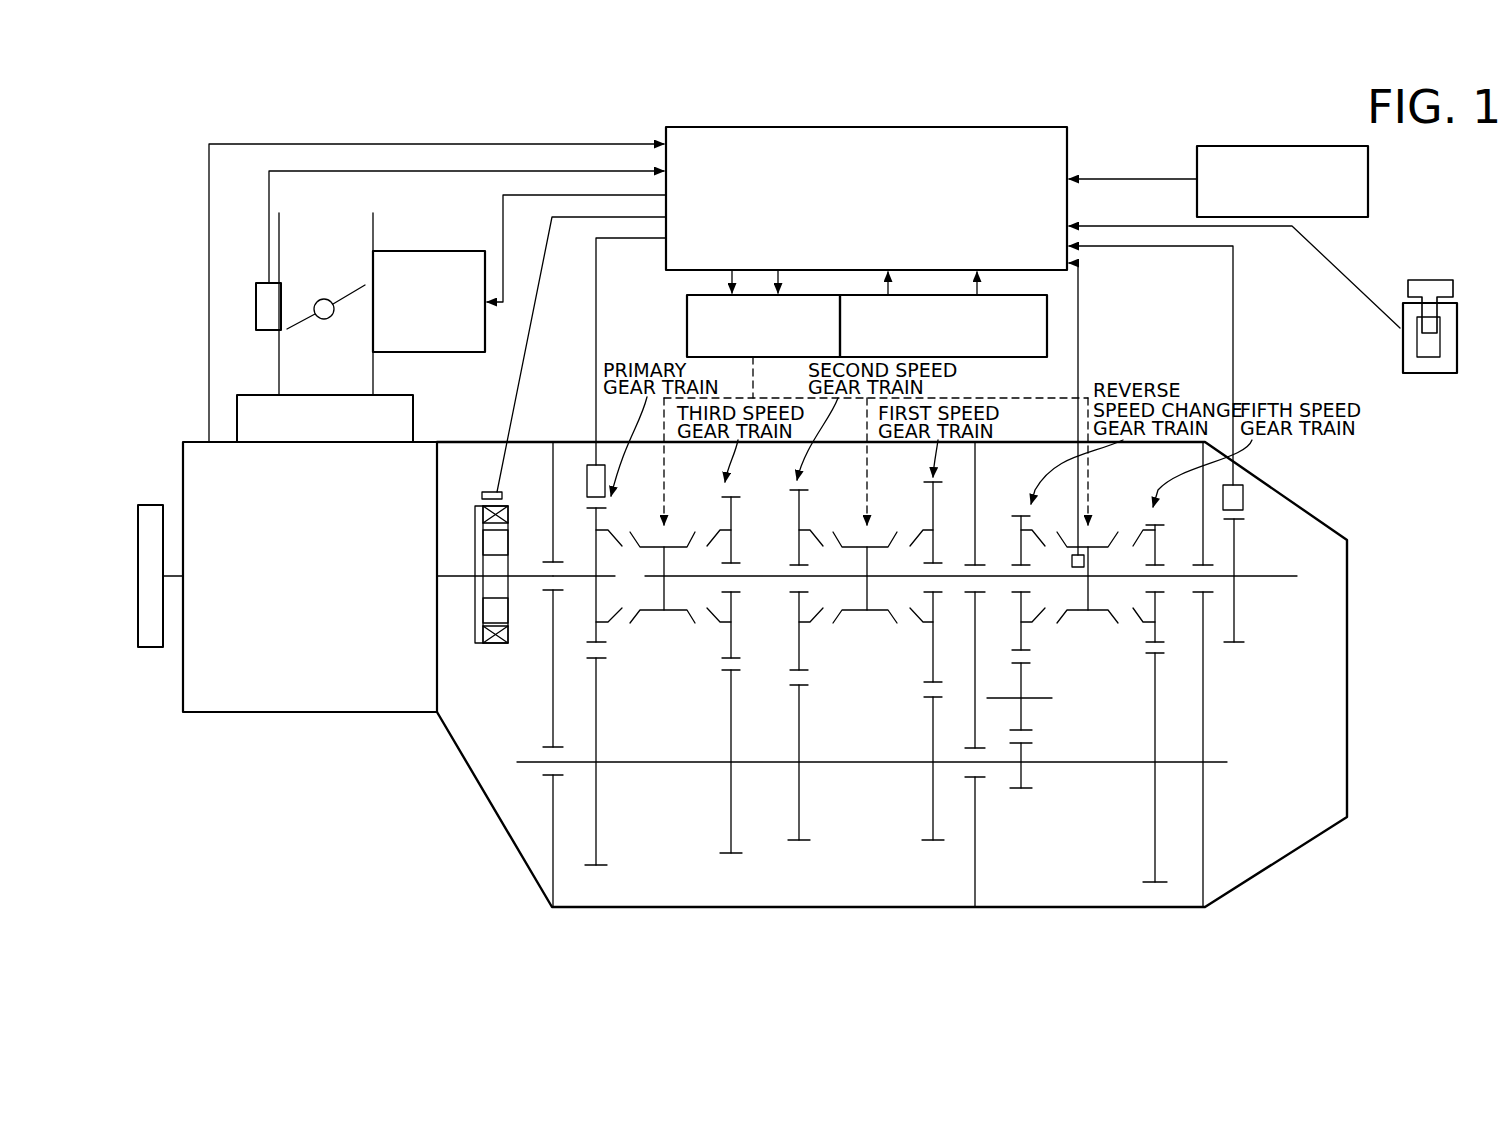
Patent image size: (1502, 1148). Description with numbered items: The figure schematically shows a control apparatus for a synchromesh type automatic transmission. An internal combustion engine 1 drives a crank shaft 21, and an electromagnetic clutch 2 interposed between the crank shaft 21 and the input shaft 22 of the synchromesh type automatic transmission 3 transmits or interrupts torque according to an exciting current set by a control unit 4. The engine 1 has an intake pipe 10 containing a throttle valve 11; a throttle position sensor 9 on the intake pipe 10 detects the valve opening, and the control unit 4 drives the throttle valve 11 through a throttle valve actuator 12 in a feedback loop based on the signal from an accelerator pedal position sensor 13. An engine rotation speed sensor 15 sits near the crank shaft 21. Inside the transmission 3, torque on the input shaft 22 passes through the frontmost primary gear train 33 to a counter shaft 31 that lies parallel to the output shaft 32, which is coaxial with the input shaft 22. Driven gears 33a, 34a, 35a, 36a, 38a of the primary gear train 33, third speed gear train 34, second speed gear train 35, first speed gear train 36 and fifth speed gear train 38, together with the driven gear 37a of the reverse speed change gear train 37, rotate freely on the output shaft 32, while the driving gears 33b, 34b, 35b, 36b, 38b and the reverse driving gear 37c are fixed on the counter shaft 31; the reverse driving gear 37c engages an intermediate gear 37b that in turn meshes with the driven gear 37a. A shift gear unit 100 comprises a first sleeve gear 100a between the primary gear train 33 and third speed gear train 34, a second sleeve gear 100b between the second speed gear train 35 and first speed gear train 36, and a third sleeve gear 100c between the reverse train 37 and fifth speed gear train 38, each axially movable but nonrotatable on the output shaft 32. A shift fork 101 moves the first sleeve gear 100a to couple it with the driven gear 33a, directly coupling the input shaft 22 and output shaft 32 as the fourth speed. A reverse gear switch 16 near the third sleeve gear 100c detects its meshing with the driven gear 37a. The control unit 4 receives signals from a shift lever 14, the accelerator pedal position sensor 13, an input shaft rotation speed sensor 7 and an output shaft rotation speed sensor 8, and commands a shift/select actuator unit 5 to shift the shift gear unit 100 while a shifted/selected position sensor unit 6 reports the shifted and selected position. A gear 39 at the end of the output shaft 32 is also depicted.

The internal combustion engine 1 is at (297, 713).
The electromagnetic clutch 2 is at (490, 655).
The synchromesh type automatic transmission 3 is at (1000, 912).
The control unit 4 is at (864, 127).
The shift/select actuator unit 5 is at (683, 330).
The shifted/selected position sensor unit 6 is at (1051, 331).
The input shaft rotation speed sensor 7 is at (588, 463).
The output shaft rotation speed sensor 8 is at (1243, 488).
The throttle position sensor 9 is at (268, 283).
The intake pipe 10 is at (374, 222).
The throttle valve 11 is at (298, 327).
The throttle valve actuator 12 is at (452, 251).
The accelerator pedal position sensor 13 is at (1232, 146).
The shift lever 14 is at (1403, 350).
The engine rotation speed sensor 15 is at (490, 491).
The reverse gear switch 16 is at (1072, 562).
The crank shaft 21 is at (456, 573).
The input shaft 22 is at (526, 573).
The counter shaft 31 is at (652, 765).
The output shaft 32 is at (1268, 576).
The primary gear train 33 is at (585, 565).
The driven gear of primary gear train 33a is at (603, 519).
The driving gear of primary gear train 33b is at (598, 710).
The third speed gear train 34 is at (738, 493).
The driven gear of third speed gear train 34a is at (735, 522).
The driving gear of third speed gear train 34b is at (733, 730).
The second speed gear train 35 is at (806, 491).
The driven gear of second speed gear train 35a is at (803, 525).
The driving gear of second speed gear train 35b is at (801, 734).
The first speed gear train 36 is at (921, 480).
The driven gear of first speed gear train 36a is at (930, 525).
The driving gear of first speed gear train 36b is at (928, 722).
The reverse speed change gear train 37 is at (1031, 525).
The driven gear of reverse speed change gear train 37a is at (1017, 523).
The intermediate gear 37b is at (1023, 710).
The driving gear of reverse speed change gear train 37c is at (1023, 776).
The fifth speed gear train 38 is at (1162, 560).
The driven gear of fifth speed gear train 38a is at (1160, 530).
The driving gear of fifth speed gear train 38b is at (1158, 703).
The output gear 39 is at (1236, 612).
The shift gear unit 100 is at (834, 642).
The first sleeve gear 100a is at (667, 612).
The second sleeve gear 100b is at (879, 612).
The third sleeve gear 100c is at (1090, 612).
The shift fork 101 is at (1092, 390).